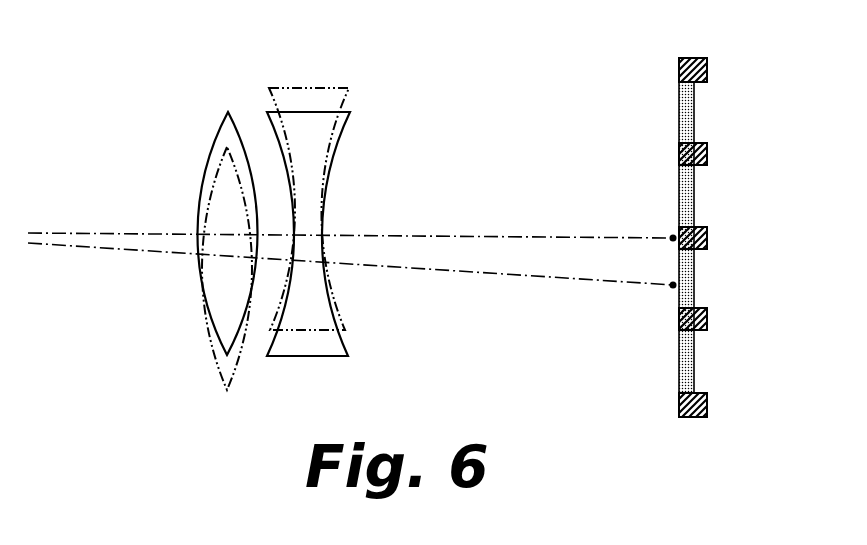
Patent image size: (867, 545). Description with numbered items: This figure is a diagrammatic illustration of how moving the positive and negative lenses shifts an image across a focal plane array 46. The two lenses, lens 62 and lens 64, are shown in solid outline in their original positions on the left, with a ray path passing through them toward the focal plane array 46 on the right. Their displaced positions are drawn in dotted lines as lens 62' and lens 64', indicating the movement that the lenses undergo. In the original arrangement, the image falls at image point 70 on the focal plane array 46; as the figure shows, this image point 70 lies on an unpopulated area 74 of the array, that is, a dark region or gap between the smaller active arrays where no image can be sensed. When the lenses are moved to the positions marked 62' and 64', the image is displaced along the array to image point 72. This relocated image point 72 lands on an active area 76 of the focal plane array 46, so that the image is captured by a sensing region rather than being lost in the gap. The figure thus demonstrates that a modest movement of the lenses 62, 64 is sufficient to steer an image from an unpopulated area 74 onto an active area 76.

The focal plane array 46 is at (759, 237).
The positive lens 62 is at (200, 222).
The moved position of lens 62 62' is at (189, 268).
The negative lens 64 is at (353, 225).
The moved position of lens 64 64' is at (350, 181).
The image point 70 is at (670, 236).
The image point 72 is at (671, 289).
The unpopulated area 74 is at (708, 240).
The active area 76 is at (708, 322).